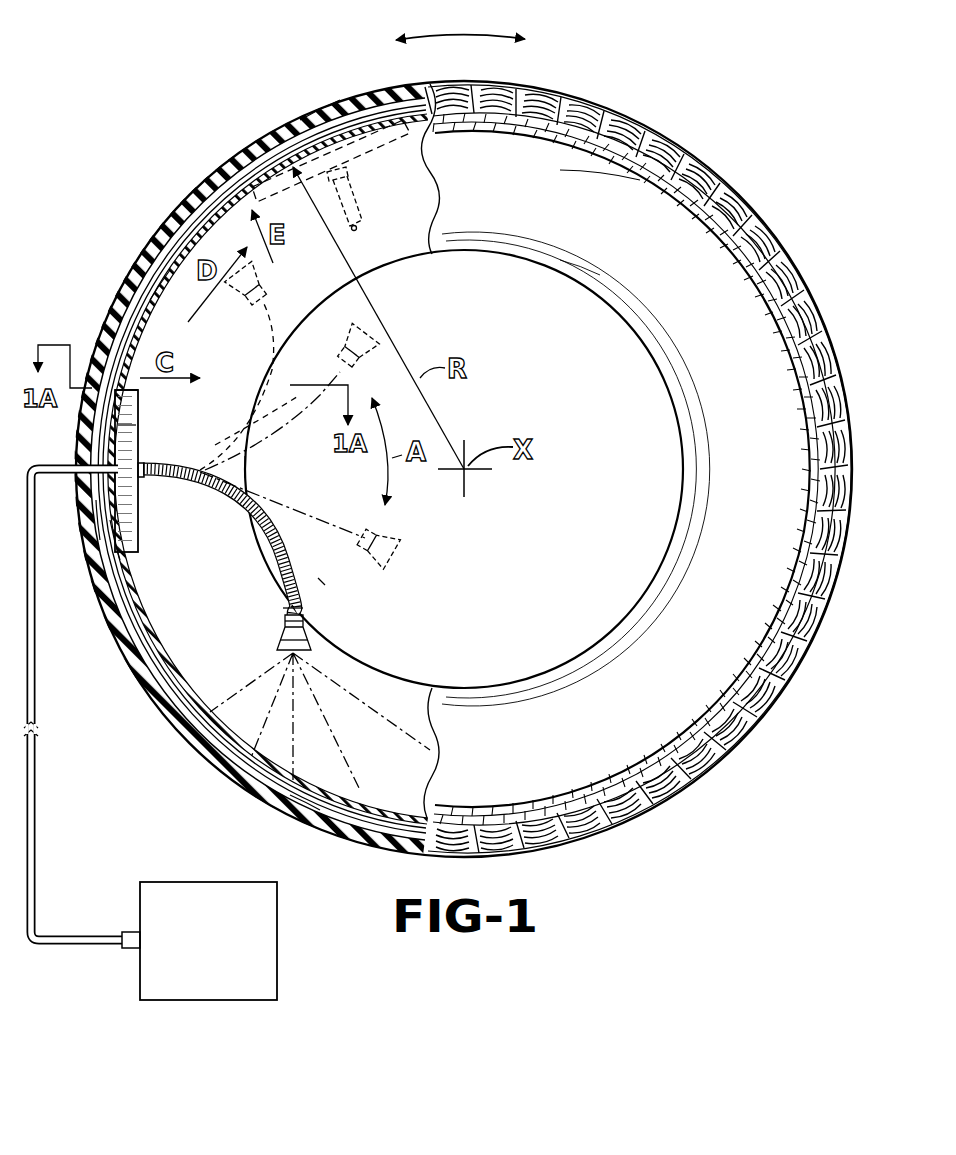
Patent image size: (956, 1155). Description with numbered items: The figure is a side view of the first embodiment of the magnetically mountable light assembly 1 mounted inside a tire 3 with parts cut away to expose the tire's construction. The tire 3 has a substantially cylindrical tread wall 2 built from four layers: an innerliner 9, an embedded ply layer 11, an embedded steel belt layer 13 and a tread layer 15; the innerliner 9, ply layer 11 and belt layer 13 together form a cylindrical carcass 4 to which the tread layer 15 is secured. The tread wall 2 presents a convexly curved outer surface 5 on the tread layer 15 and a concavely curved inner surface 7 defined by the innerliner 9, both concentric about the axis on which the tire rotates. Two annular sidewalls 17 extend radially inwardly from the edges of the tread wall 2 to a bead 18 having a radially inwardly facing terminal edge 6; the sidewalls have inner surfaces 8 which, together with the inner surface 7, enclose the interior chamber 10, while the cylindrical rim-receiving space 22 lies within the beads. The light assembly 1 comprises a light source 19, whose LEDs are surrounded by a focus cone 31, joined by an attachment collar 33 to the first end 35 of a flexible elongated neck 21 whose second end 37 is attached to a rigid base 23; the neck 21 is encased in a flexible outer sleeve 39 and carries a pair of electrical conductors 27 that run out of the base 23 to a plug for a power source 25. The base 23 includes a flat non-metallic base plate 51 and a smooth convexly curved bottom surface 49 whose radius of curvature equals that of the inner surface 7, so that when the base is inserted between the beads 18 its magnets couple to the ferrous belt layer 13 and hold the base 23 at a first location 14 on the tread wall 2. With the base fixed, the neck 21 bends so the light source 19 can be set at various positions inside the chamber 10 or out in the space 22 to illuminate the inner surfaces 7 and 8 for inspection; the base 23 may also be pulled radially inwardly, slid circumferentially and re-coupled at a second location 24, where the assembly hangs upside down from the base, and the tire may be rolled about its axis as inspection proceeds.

The light assembly 1 is at (318, 578).
The tread wall 2 is at (186, 182).
The tire 3 is at (680, 110).
The carcass 4 is at (256, 748).
The outer surface 5 is at (705, 160).
The terminal edge 6 is at (682, 466).
The inner surface 7 is at (150, 295).
The inner surface of sidewall 8 is at (390, 234).
The innerliner 9 is at (305, 792).
The interior chamber 10 is at (172, 302).
The ply layer 11 is at (120, 598).
The steel belt layer 13 is at (120, 574).
The first location 14 is at (113, 530).
The tread layer 15 is at (318, 118).
The sidewalls 17 is at (600, 197).
The bead 18 is at (575, 265).
The light source 19 is at (335, 335).
The neck 21 is at (366, 212).
The rim-receiving space 22 is at (614, 395).
The base 23 is at (380, 150).
The second location 24 is at (262, 160).
The power source 25 is at (178, 882).
The electrical conductors 27 is at (38, 795).
The focus cone 31 is at (284, 650).
The attachment collar 33 is at (290, 622).
The first end 35 is at (282, 606).
The second end 37 is at (148, 482).
The outer sleeve 39 is at (280, 513).
The bottom surface 49 is at (118, 432).
The base plate 51 is at (140, 432).